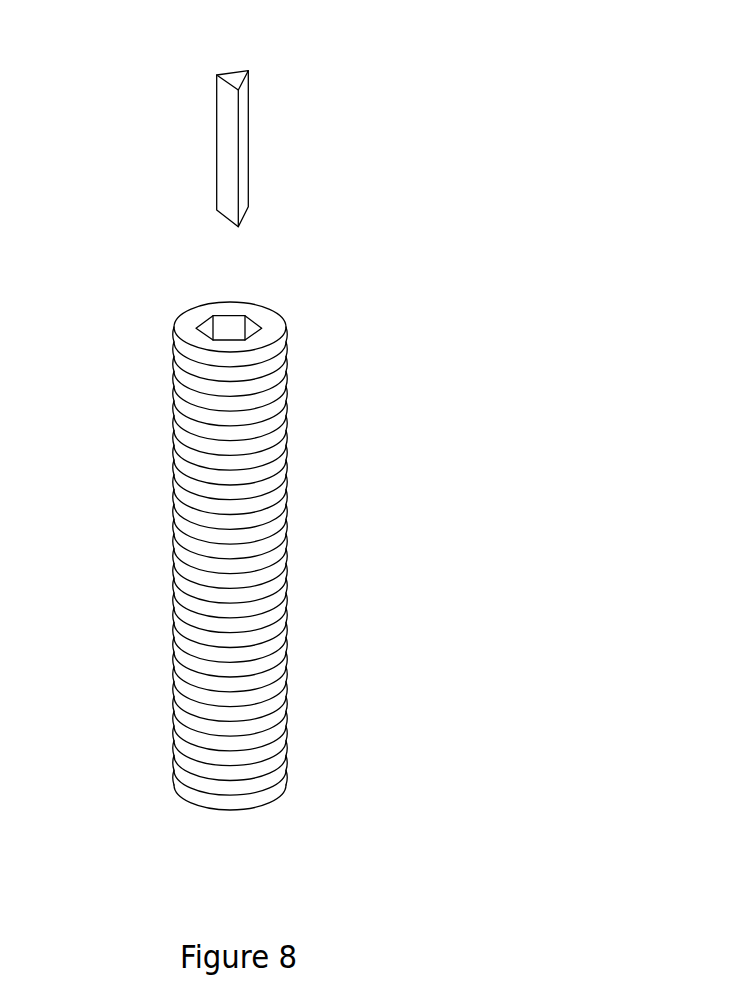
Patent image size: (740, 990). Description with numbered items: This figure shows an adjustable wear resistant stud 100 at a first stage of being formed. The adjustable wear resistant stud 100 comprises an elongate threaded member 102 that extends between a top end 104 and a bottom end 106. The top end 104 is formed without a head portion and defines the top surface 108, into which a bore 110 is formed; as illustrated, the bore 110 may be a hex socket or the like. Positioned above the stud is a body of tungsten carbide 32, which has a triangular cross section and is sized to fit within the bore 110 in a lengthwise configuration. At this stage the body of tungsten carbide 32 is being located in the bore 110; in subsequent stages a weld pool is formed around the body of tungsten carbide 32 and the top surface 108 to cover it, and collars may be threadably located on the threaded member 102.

The adjustable wear resistant stud 100 is at (288, 107).
The body of tungsten carbide 32 is at (217, 143).
The elongate threaded member 102 is at (286, 518).
The top end 104 is at (286, 330).
The bottom end 106 is at (260, 812).
The top surface 108 is at (182, 323).
The bore 110 is at (237, 323).